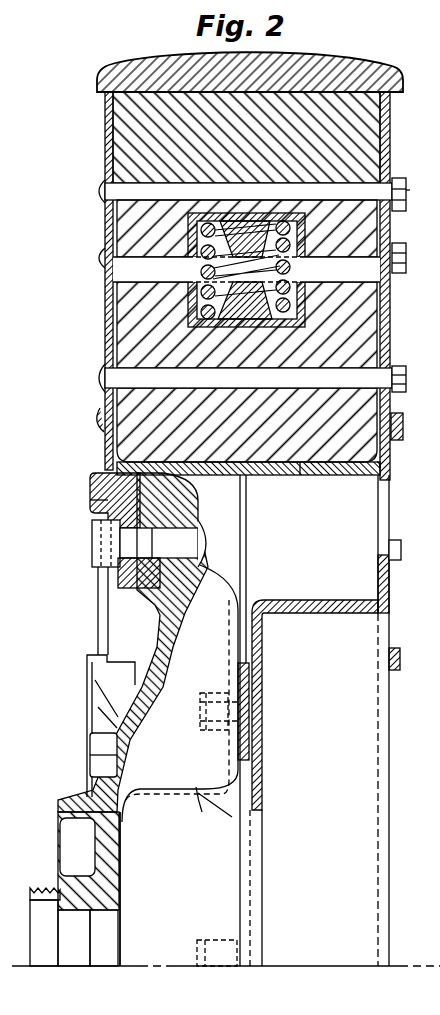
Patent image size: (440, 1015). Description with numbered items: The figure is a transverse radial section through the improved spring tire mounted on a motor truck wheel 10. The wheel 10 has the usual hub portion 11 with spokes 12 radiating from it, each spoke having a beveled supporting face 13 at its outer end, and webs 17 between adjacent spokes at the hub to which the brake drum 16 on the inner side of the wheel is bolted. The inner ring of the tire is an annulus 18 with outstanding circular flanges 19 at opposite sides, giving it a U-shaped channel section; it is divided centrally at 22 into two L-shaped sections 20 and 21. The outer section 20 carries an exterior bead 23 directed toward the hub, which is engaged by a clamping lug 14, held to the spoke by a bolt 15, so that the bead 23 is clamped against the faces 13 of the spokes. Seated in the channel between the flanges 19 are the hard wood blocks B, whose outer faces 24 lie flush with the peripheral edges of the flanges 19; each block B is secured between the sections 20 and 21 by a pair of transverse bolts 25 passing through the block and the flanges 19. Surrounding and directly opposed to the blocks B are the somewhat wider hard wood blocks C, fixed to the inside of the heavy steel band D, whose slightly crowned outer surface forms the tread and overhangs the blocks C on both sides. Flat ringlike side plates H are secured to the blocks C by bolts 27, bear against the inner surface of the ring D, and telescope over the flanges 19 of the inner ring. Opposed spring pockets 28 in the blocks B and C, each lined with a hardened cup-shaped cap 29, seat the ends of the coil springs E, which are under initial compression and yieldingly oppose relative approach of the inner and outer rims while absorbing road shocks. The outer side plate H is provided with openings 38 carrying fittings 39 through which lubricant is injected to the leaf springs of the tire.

The outer bandlike ring D is at (150, 78).
The outer hard wood blocks C is at (135, 135).
The side plates H is at (105, 150).
The bolts 27 is at (100, 200).
The cup-shaped cap 29 is at (200, 246).
The spring pockets 28 is at (300, 222).
The outer faces of blocks B 24 is at (125, 290).
The coil springs E is at (105, 308).
The outer section of annulus A 20 is at (117, 352).
The inner section of annulus A 21 is at (390, 312).
The fittings 39 is at (438, 220).
The lubricant openings 38 is at (432, 250).
The transverse bolts 25 is at (100, 412).
The circular flanges 19 is at (105, 430).
The beveled supporting faces 13 is at (117, 468).
The exterior bead 23 is at (92, 485).
The clamping lug 14 is at (90, 500).
The bolt 15 is at (92, 550).
The spokes 12 is at (150, 610).
The hub portion 11 is at (78, 878).
The webs 17 is at (228, 662).
The central division of annulus 22 is at (248, 490).
The annulus 18 is at (316, 478).
The inner hard wood blocks B is at (343, 478).
The brake drum 16 is at (304, 613).
The motor truck wheel 10 is at (330, 800).